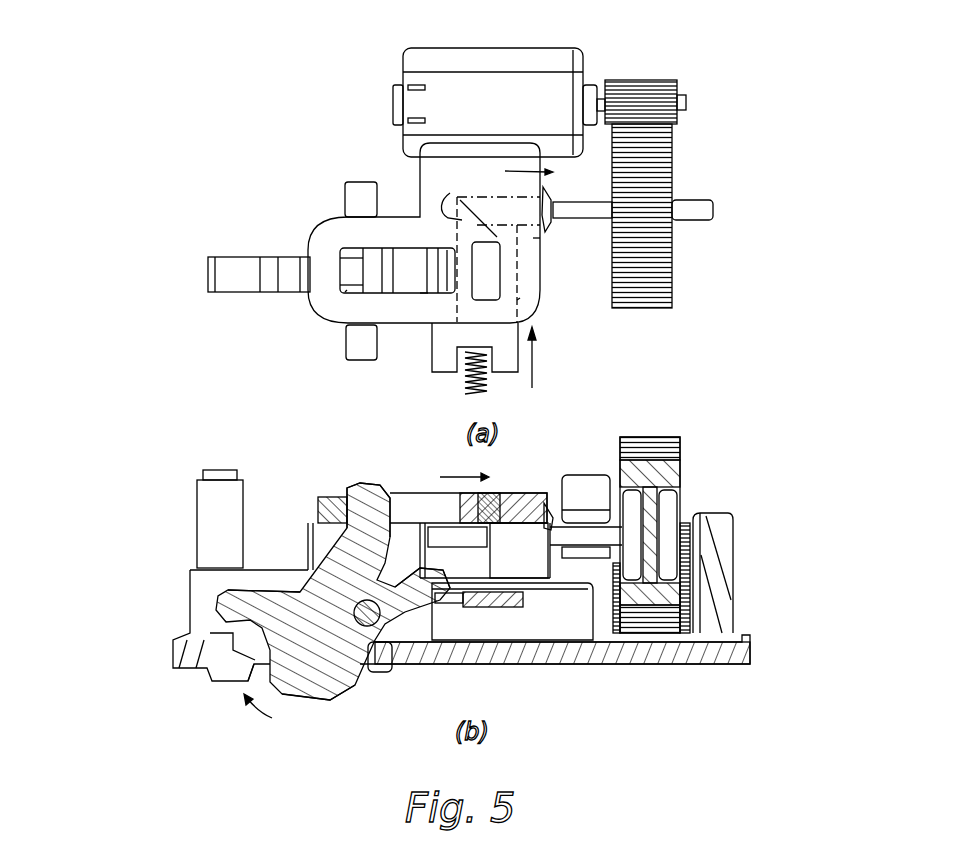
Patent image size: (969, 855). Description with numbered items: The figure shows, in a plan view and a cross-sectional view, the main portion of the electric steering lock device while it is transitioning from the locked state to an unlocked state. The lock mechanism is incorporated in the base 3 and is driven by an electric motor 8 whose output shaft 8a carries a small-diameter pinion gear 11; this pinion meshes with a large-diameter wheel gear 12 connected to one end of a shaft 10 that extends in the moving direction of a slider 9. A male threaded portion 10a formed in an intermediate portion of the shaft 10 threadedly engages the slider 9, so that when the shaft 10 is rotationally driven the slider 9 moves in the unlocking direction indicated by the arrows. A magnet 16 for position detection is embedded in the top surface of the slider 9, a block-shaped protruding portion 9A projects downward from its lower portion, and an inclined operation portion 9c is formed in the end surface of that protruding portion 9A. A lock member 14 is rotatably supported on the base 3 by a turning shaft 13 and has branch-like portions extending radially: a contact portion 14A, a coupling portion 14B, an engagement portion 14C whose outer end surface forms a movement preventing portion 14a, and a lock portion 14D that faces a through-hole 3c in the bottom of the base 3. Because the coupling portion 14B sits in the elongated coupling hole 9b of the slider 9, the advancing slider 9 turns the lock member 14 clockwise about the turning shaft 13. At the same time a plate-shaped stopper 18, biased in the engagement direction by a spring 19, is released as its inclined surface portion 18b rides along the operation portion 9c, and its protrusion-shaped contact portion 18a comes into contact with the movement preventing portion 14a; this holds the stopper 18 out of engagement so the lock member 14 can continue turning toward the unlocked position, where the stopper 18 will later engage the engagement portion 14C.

The base 3 is at (461, 596).
The through-hole 3c is at (248, 683).
The electric motor 8 is at (496, 81).
The output shaft 8a is at (612, 74).
The slider 9 is at (418, 208).
The protruding portion 9A is at (515, 439).
The coupling hole 9b is at (347, 291).
The operation portion 9c is at (448, 193).
The shaft 10 is at (590, 525).
The male threaded portion 10a is at (613, 676).
The small-diameter pinion gear 11 is at (686, 550).
The large-diameter wheel gear 12 is at (672, 378).
The turning shaft 13 is at (398, 683).
The lock member 14 is at (337, 565).
The contact portion 14A is at (264, 556).
The coupling portion 14B is at (362, 277).
The engagement portion 14C is at (422, 602).
The lock portion 14D is at (340, 688).
The movement preventing portion 14a is at (423, 295).
The magnet 16 is at (495, 492).
The stopper 18 is at (537, 677).
The contact portion 18a is at (447, 253).
The inclined surface portion 18b is at (497, 237).
The spring 19 is at (462, 383).